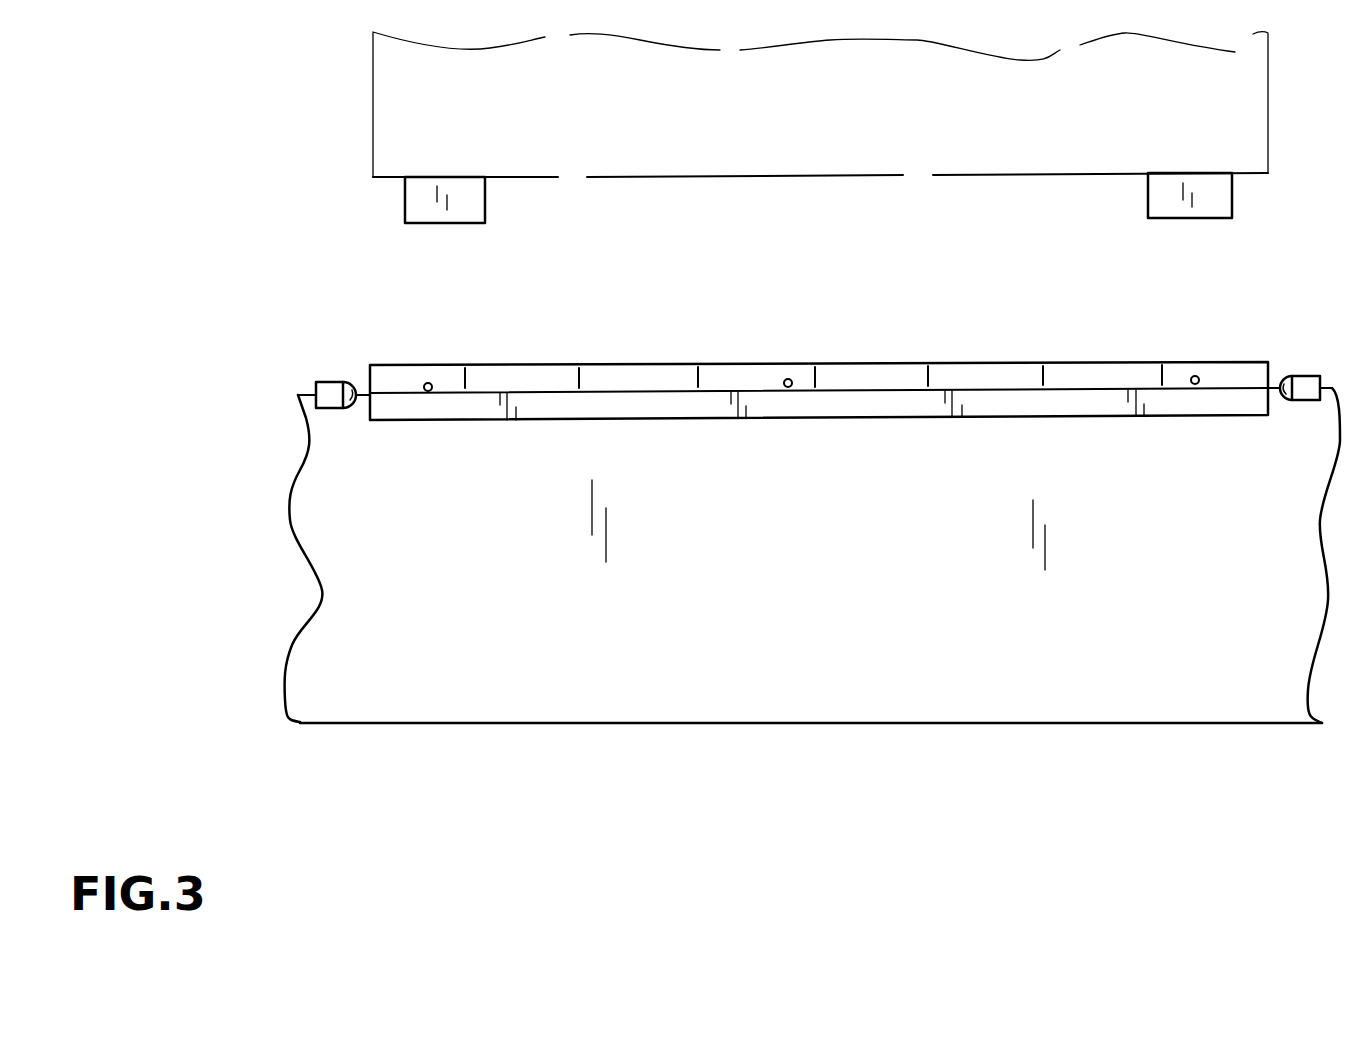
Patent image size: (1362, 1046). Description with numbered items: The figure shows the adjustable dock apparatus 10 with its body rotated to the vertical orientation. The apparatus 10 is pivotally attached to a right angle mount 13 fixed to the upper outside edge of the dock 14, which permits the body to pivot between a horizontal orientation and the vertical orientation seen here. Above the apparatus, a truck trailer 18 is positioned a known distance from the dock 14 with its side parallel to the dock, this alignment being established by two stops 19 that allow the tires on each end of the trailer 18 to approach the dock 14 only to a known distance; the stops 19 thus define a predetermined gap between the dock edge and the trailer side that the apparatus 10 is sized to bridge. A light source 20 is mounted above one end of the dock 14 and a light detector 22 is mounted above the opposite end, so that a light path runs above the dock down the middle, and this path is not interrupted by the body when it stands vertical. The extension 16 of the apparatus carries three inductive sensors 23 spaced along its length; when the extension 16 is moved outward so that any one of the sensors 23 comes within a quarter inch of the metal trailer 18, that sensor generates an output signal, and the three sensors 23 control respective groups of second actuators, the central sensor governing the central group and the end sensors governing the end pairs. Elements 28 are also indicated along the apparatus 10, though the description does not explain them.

The adjustable dock apparatus 10 is at (990, 292).
The right angle mount 13 is at (660, 405).
The dock 14 is at (815, 568).
The extension 16 is at (875, 372).
The truck trailer 18 is at (822, 125).
The stops 19 is at (460, 200).
The light source 20 is at (1308, 385).
The light detector 22 is at (330, 390).
The inductive sensors 23 is at (430, 391).
The contacts 28 is at (465, 378).